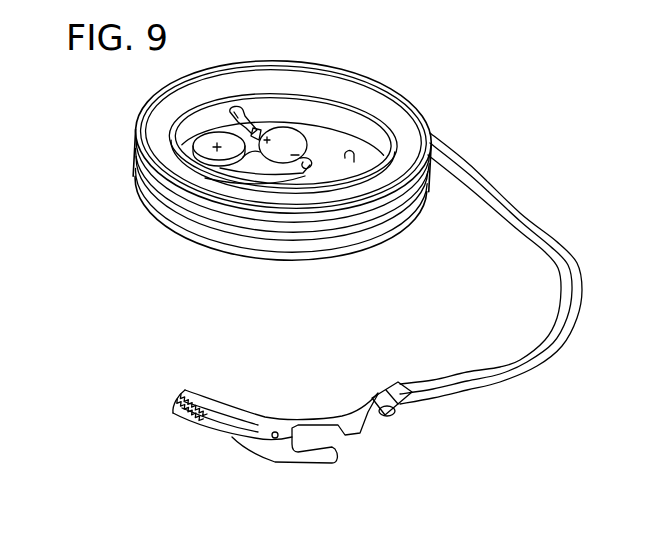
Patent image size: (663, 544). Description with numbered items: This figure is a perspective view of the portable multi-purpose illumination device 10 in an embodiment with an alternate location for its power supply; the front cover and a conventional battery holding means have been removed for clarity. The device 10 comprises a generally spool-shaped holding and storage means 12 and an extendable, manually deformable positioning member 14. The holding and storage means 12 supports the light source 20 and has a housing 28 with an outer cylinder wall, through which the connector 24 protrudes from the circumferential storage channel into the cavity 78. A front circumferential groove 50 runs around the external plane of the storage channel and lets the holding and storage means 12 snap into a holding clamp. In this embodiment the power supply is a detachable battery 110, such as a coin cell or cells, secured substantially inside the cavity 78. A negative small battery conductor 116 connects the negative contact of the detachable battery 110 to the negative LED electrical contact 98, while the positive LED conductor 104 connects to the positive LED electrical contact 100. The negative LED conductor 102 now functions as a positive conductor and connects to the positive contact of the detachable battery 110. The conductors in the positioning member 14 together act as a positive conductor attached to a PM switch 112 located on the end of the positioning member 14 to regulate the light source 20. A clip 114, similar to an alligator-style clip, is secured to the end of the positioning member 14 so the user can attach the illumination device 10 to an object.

The portable multi-purpose illumination device 10 is at (145, 318).
The holding and storage means 12 is at (414, 101).
The positioning member 14 is at (560, 272).
The light source 20 is at (312, 140).
The connector 24 is at (222, 130).
The housing 28 is at (220, 180).
The front circumferential groove 50 is at (394, 192).
The cavity 78 is at (352, 162).
The negative LED electrical contact 98 is at (312, 157).
The positive LED electrical contact 100 is at (288, 132).
The negative LED conductor 102 is at (194, 142).
The positive LED conductor 104 is at (240, 110).
The detachable battery 110 is at (232, 100).
The PM switch 112 is at (412, 413).
The clip 114 is at (250, 442).
The negative small battery conductor 116 is at (263, 170).